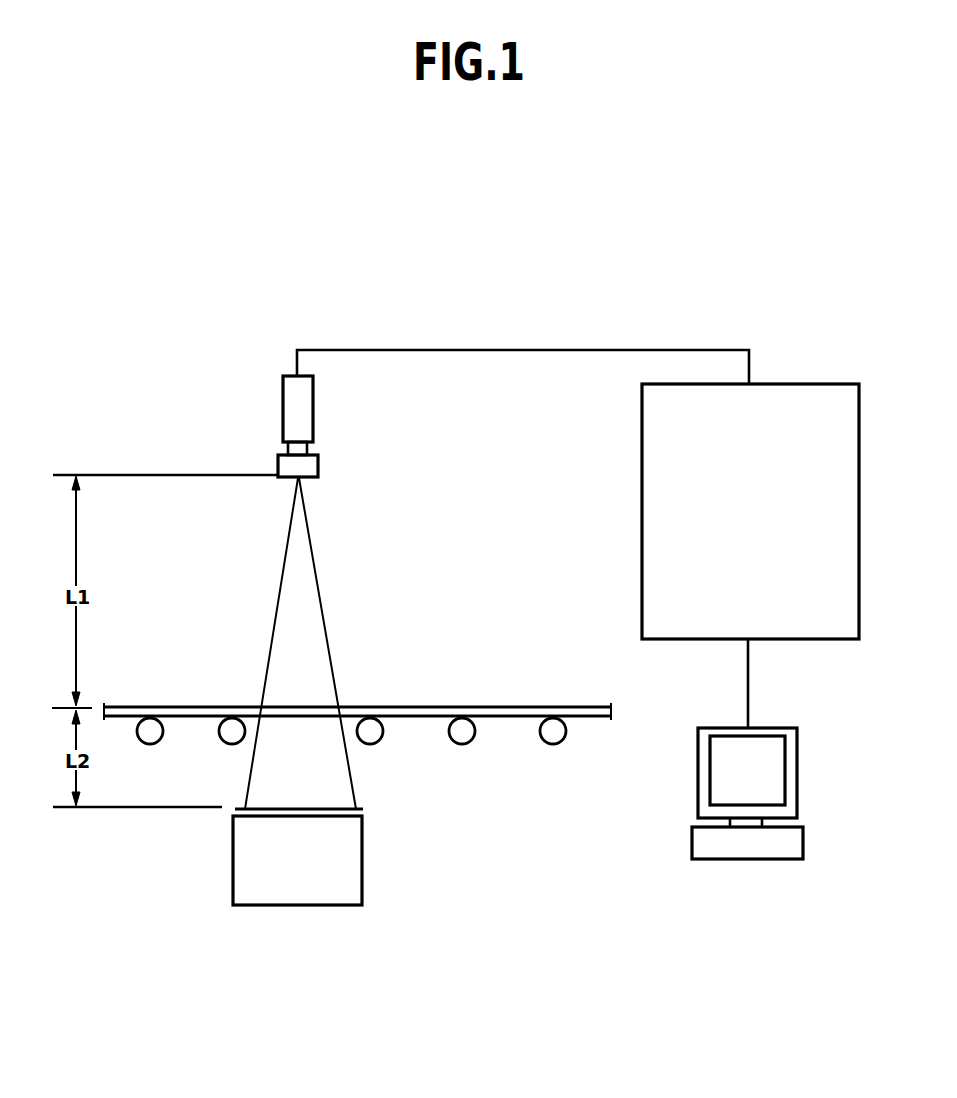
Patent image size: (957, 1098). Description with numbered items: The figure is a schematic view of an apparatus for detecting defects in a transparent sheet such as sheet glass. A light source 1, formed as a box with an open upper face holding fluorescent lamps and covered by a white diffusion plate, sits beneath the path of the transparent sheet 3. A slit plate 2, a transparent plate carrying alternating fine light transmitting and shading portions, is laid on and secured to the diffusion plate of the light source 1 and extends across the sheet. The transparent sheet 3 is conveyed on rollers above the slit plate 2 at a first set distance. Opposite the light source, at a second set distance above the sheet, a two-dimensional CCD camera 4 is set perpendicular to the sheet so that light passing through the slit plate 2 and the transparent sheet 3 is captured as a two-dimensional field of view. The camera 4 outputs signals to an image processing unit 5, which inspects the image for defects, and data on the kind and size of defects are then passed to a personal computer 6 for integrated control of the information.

The light source 1 is at (345, 850).
The slit plate 2 is at (323, 807).
The transparent sheet 3 is at (427, 707).
The two-dimensional camera 4 is at (305, 409).
The image processing unit 5 is at (800, 393).
The personal computer 6 is at (797, 778).